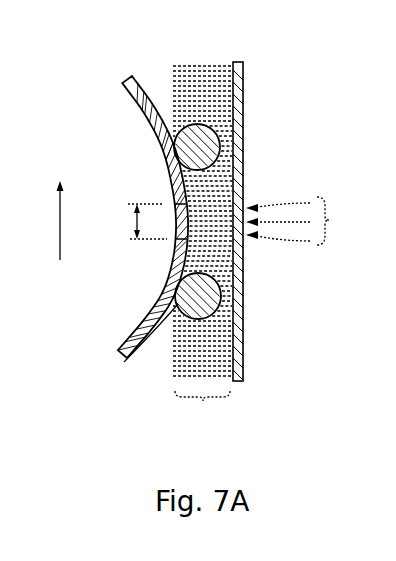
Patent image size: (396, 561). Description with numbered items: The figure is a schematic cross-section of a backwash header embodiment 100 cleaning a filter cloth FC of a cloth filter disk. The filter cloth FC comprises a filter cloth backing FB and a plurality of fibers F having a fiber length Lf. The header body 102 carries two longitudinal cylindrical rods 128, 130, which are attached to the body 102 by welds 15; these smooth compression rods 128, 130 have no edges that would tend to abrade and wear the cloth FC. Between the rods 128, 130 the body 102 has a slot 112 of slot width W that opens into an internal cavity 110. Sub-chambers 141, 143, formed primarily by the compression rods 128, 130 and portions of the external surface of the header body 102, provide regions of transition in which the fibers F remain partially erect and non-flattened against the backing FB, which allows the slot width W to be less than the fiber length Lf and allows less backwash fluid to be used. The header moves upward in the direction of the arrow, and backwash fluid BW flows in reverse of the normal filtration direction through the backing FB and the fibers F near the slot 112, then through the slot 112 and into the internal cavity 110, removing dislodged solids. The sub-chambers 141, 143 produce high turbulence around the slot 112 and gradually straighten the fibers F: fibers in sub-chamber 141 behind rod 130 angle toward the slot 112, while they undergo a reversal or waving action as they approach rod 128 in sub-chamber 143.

The backwash header embodiment 100 is at (286, 82).
The internal cavity 110 is at (110, 146).
The longitudinal cylindrical rod 130 is at (220, 140).
The longitudinal cylindrical rod 128 is at (216, 300).
The sub-chamber 141 is at (166, 174).
The slot 112 is at (168, 238).
The header body 102 is at (130, 338).
The welds 15 is at (172, 303).
The sub-chamber 143 is at (243, 263).
The fibers F is at (215, 62).
The filter cloth FC is at (243, 66).
The filter cloth backing FB is at (243, 171).
The backwash fluid BW is at (329, 220).
The slot width W is at (133, 222).
The fiber length Lf is at (203, 401).